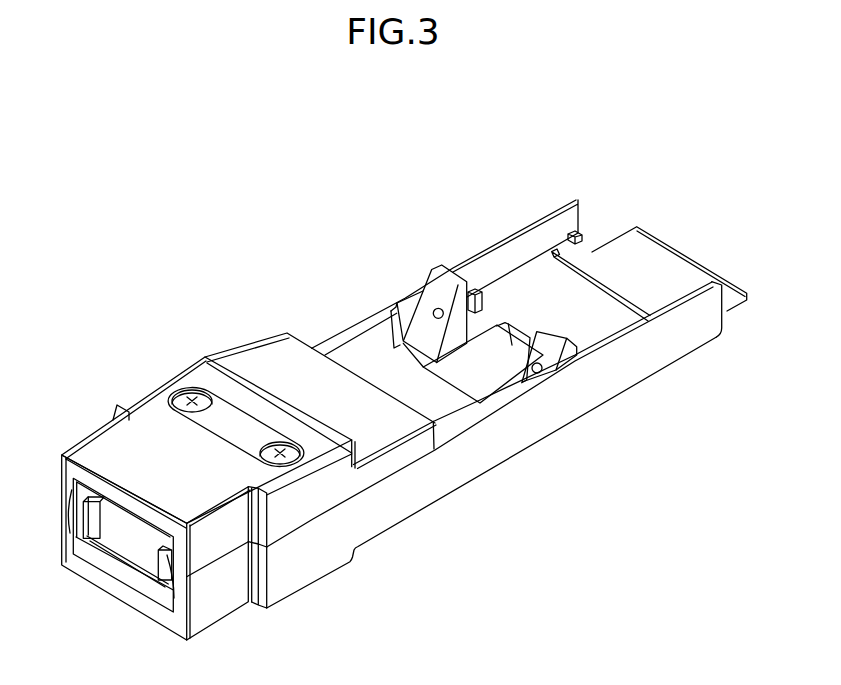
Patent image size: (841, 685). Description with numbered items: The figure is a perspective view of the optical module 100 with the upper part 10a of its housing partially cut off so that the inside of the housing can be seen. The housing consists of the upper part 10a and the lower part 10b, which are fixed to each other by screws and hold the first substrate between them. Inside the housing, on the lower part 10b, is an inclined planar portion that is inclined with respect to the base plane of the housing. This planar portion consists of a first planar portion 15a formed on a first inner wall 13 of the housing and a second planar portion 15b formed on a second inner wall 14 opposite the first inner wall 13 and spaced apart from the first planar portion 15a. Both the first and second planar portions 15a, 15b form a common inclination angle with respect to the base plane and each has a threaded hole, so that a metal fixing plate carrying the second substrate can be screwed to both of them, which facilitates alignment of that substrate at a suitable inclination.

The optical module 100 is at (199, 241).
The upper part 10a is at (87, 447).
The lower part 10b is at (540, 428).
The first inner wall 13 is at (407, 310).
The second inner wall 14 is at (528, 375).
The first planar portion 15a is at (447, 293).
The second planar portion 15b is at (552, 332).